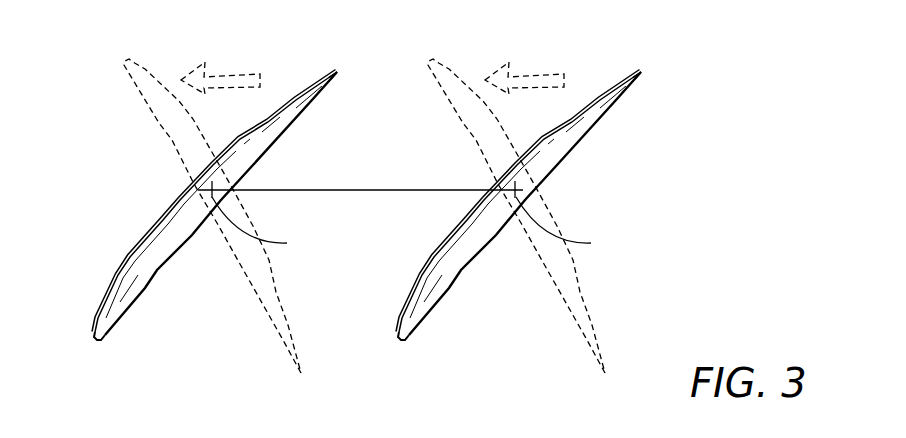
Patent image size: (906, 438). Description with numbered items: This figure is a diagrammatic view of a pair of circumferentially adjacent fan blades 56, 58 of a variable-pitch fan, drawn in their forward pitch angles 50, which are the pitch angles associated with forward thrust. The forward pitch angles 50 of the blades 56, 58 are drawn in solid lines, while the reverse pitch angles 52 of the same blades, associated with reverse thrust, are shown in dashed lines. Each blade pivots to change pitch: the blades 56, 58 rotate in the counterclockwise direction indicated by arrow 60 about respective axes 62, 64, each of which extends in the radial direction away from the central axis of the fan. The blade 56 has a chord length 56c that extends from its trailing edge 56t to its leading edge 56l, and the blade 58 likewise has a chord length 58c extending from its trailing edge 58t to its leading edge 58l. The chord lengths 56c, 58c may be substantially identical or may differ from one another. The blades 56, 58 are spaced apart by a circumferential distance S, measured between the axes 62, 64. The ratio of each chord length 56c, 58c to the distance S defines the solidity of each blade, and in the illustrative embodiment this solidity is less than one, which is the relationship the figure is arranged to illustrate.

The forward pitch angles 50 is at (297, 117).
The reverse pitch angles 52 is at (298, 344).
The fan blade 56 is at (217, 212).
The trailing edge 56t is at (340, 72).
The chord length 56c is at (143, 288).
The leading edge 56l is at (93, 331).
The fan blade 58 is at (521, 212).
The trailing edge 58t is at (644, 72).
The chord length 58c is at (440, 298).
The leading edge 58l is at (397, 331).
The arrow 60 is at (217, 77).
The axis 62 is at (266, 227).
The axis 64 is at (570, 227).
The circumferential distance S is at (387, 191).